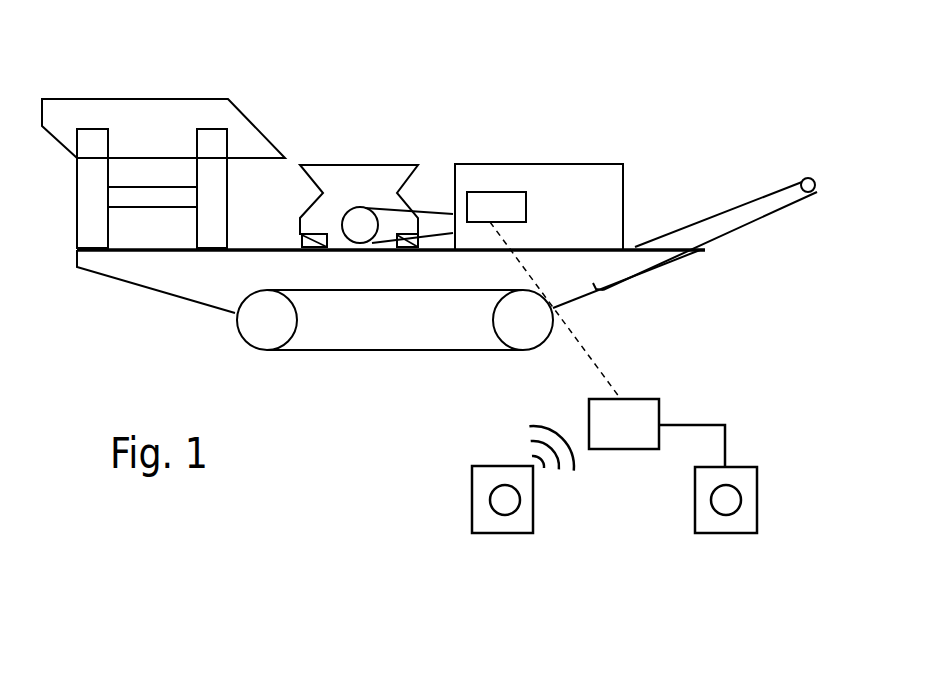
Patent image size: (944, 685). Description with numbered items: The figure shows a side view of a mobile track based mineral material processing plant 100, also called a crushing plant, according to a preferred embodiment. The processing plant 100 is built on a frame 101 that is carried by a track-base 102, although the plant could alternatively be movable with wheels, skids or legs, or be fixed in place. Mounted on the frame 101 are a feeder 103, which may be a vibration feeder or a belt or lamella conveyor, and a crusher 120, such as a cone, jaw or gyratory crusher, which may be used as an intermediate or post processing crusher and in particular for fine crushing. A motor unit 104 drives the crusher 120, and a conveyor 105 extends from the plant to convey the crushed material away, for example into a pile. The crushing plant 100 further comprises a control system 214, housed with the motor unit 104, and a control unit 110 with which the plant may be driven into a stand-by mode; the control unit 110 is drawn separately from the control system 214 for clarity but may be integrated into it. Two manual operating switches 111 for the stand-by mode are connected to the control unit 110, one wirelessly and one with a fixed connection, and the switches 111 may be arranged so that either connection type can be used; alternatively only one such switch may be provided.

The mineral material processing plant 100 is at (328, 25).
The frame 101 is at (590, 282).
The track-base 102 is at (483, 348).
The feeder 103 is at (132, 103).
The motor unit 104 is at (617, 184).
The discharge conveyor 105 is at (755, 215).
The control unit 110 is at (615, 440).
The manual operating switch 111 is at (477, 508).
The crusher 120 is at (384, 166).
The control system 214 is at (478, 192).